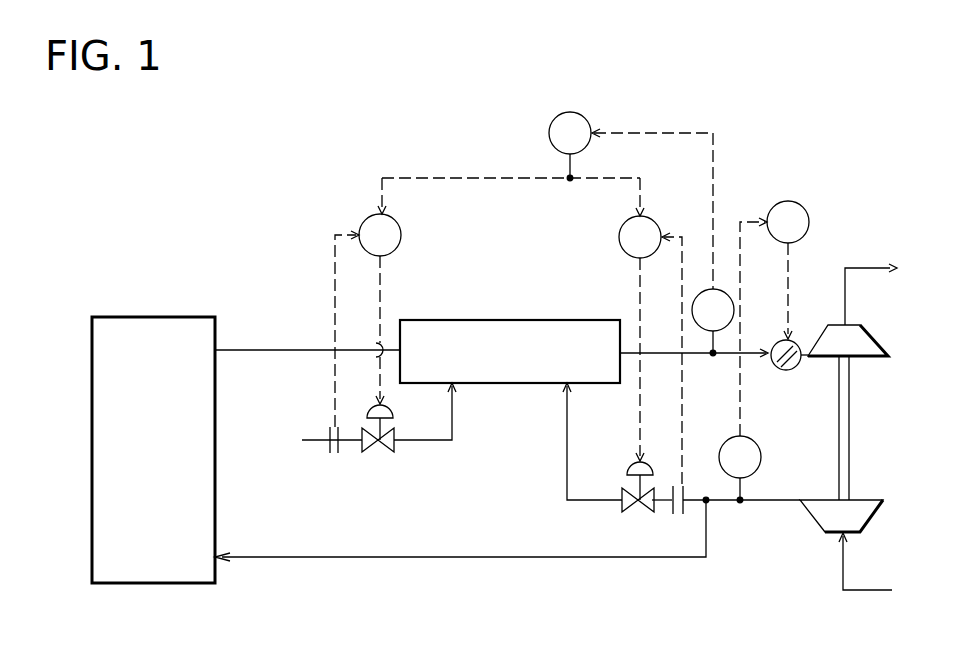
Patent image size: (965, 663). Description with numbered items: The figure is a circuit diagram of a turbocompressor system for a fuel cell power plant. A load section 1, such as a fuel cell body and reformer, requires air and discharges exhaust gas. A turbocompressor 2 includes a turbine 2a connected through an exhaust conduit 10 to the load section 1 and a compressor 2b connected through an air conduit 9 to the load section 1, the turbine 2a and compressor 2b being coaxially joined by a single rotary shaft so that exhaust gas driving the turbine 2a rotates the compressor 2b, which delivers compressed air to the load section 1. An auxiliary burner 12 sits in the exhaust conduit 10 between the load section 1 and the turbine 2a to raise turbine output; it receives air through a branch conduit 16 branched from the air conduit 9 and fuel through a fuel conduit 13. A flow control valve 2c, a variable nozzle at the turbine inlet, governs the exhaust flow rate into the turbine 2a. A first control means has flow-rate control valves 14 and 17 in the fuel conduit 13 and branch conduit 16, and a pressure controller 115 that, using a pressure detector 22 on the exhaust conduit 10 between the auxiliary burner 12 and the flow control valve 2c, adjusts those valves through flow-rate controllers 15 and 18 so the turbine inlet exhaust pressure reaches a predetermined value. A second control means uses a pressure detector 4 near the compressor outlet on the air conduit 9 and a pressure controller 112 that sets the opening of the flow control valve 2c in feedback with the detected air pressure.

The load section 1 is at (92, 458).
The turbocompressor 2 is at (858, 387).
The turbine 2a is at (876, 339).
The compressor 2b is at (884, 508).
The flow control valve 2c is at (797, 343).
The pressure detector 4 is at (761, 456).
The air conduit 9 is at (363, 560).
The exhaust conduit 10 is at (276, 350).
The auxiliary burner 12 is at (512, 320).
The fuel conduit 13 is at (422, 440).
The flow-rate control valve 14 is at (375, 452).
The flow-rate controller 15 is at (401, 232).
The branch conduit 16 is at (567, 450).
The flow-rate control valve 17 is at (632, 512).
The flow-rate controller 18 is at (619, 235).
The pressure detector 22 is at (702, 333).
The pressure controller 112 is at (788, 201).
The pressure controller 115 is at (570, 112).